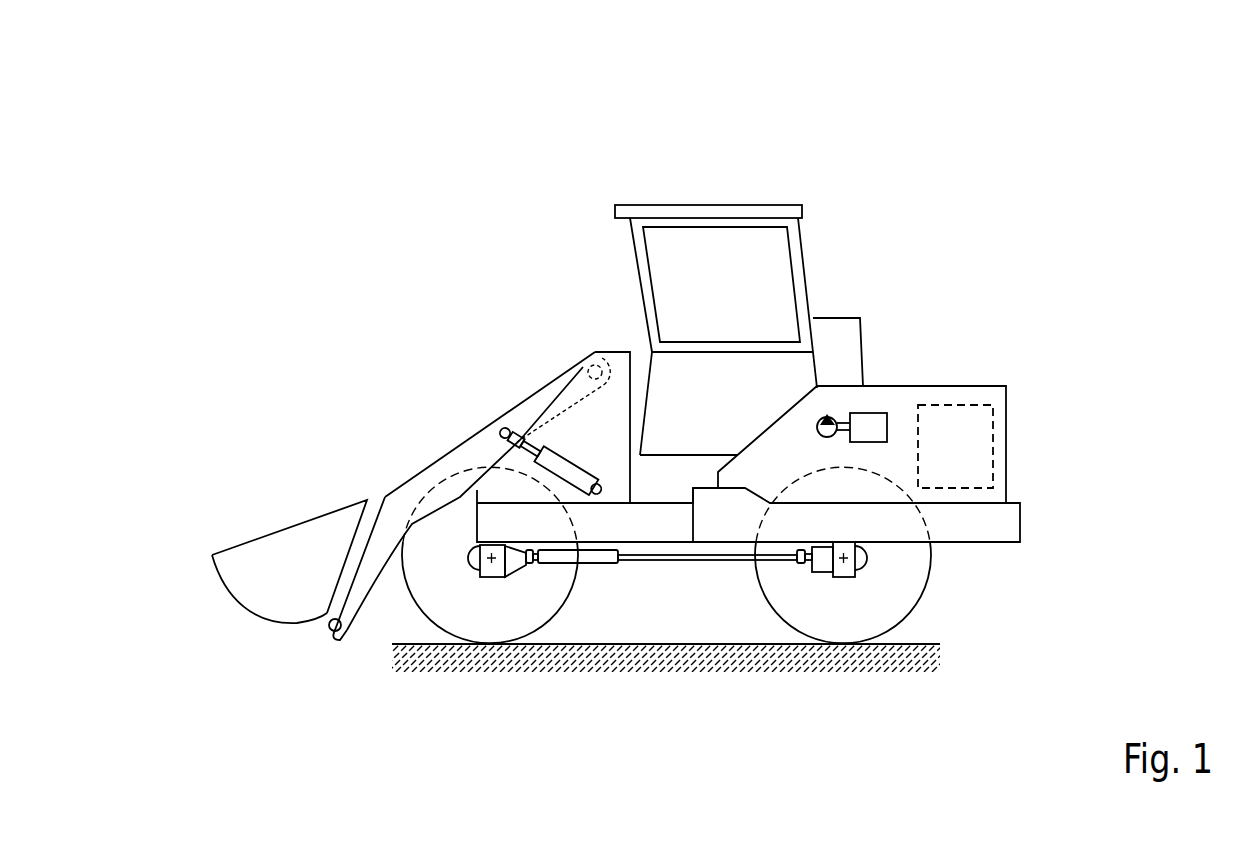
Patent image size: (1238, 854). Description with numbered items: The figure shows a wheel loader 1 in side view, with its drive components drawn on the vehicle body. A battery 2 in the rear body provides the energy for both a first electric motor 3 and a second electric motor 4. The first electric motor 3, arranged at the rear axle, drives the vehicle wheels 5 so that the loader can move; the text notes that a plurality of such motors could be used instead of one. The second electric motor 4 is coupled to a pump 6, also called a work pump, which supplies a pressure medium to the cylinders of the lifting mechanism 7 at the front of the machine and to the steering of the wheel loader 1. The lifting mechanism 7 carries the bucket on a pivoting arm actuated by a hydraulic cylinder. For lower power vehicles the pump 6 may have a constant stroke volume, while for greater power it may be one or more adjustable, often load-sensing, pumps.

The wheel loader 1 is at (528, 232).
The battery 2 is at (963, 445).
The first electric motor 3 is at (823, 562).
The second electric motor 4 is at (870, 428).
The vehicle wheels 5 is at (505, 607).
The pump 6 is at (833, 420).
The lifting mechanism 7 is at (403, 453).